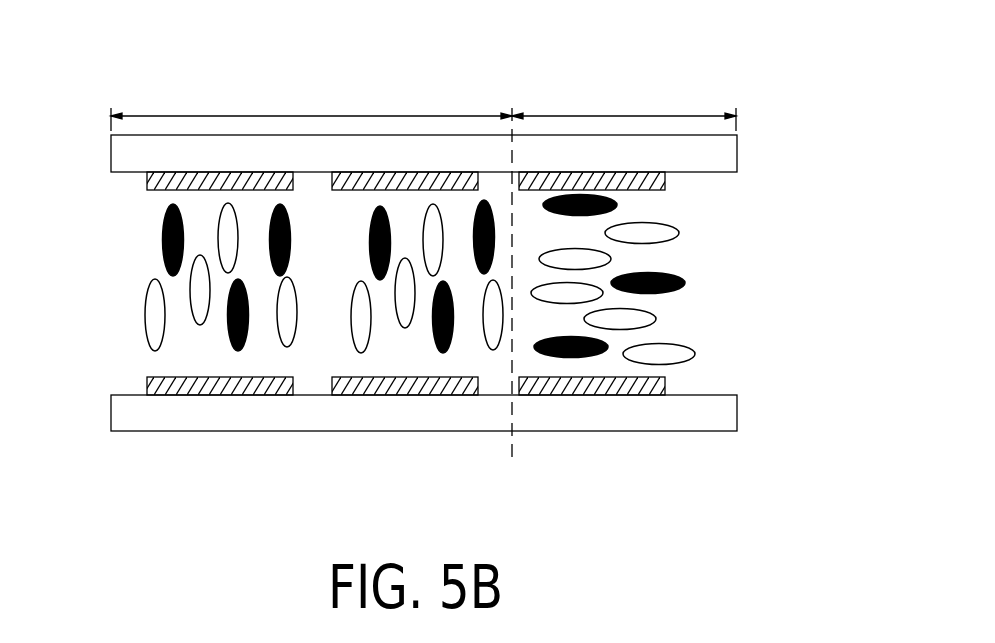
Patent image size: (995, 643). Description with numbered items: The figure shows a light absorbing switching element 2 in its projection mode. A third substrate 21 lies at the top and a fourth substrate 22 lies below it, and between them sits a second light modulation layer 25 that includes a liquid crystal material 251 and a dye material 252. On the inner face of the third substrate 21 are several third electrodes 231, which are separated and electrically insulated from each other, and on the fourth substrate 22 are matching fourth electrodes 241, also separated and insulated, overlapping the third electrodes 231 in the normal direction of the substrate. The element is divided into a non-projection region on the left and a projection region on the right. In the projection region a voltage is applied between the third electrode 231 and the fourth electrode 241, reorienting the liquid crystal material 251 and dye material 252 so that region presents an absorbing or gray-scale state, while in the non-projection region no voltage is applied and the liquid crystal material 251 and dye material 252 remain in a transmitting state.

The light absorbing switching element 2 is at (44, 58).
The third substrate 21 is at (738, 152).
The fourth substrate 22 is at (737, 413).
The third electrode 231 is at (665, 180).
The fourth electrode 241 is at (665, 385).
The second light modulation layer 25 is at (101, 184).
The liquid crystal material 251 is at (680, 233).
The dye material 252 is at (685, 283).